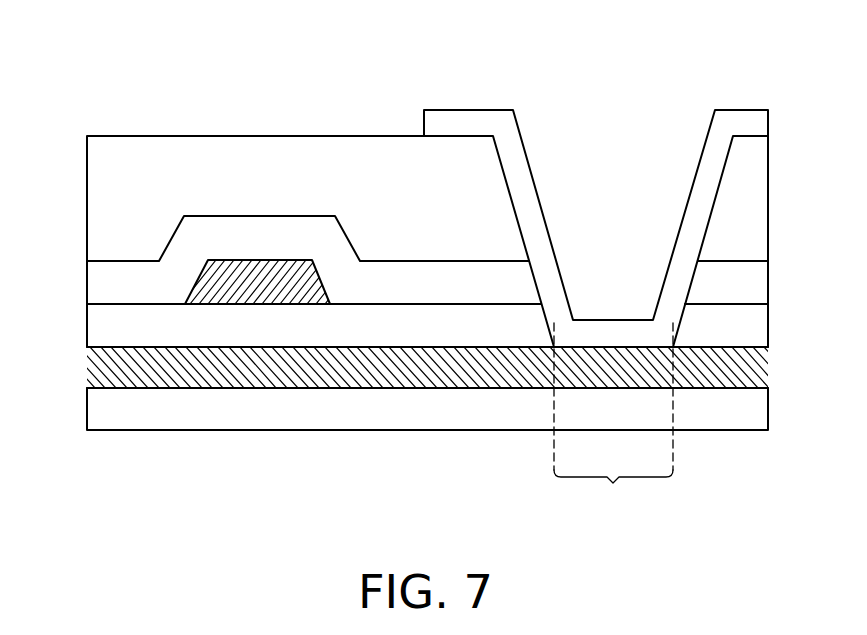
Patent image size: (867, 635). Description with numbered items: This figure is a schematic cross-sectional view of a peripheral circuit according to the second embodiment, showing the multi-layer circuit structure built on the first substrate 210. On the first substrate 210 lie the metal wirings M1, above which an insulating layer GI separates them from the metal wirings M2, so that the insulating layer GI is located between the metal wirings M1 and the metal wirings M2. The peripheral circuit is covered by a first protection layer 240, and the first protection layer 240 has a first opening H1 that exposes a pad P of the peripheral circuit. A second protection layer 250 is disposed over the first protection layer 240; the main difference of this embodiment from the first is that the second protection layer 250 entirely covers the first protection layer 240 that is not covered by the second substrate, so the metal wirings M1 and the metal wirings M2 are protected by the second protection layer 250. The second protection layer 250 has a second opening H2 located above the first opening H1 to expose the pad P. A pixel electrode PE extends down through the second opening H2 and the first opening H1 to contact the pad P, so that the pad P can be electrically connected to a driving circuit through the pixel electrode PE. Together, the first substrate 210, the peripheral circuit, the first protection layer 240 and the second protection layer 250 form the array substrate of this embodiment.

The first substrate 210 is at (755, 408).
The metal wirings M1 is at (762, 367).
The insulating layer GI is at (102, 328).
The metal wirings M2 is at (215, 292).
The first protection layer 240 is at (220, 235).
The second protection layer 250 is at (102, 159).
The pixel electrode PE is at (744, 120).
The first openings H1 is at (539, 281).
The second openings H2 is at (514, 197).
The pads P is at (613, 422).